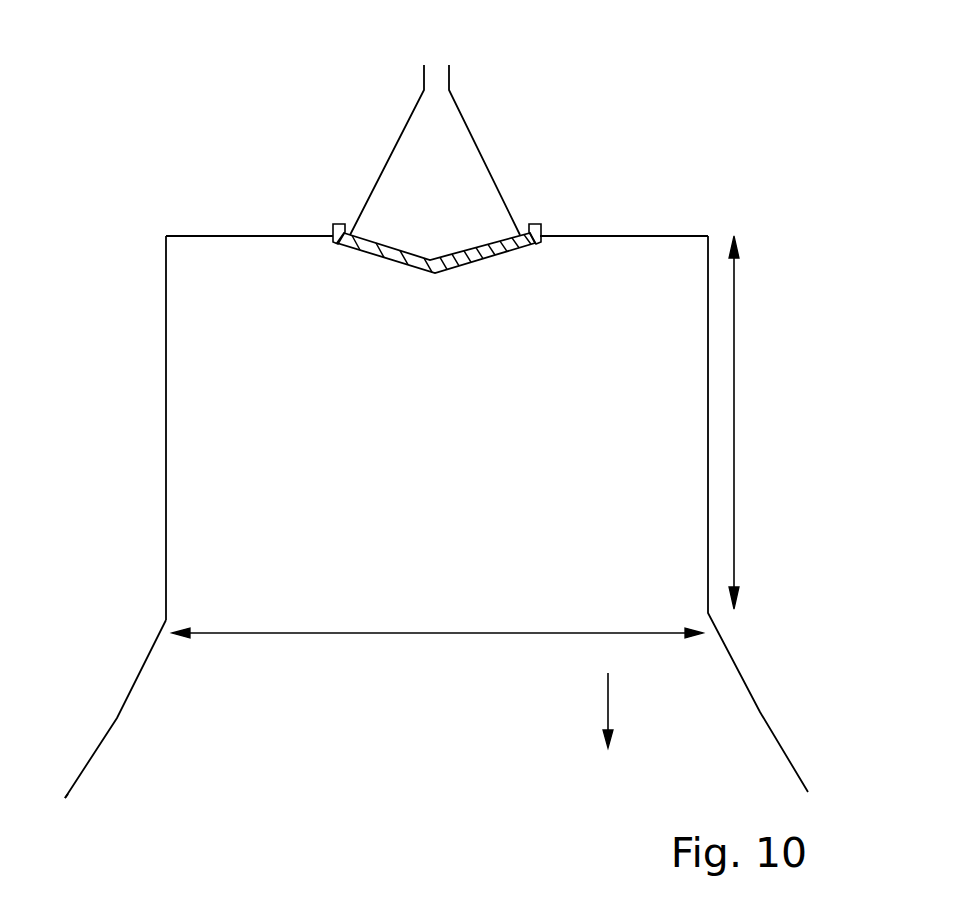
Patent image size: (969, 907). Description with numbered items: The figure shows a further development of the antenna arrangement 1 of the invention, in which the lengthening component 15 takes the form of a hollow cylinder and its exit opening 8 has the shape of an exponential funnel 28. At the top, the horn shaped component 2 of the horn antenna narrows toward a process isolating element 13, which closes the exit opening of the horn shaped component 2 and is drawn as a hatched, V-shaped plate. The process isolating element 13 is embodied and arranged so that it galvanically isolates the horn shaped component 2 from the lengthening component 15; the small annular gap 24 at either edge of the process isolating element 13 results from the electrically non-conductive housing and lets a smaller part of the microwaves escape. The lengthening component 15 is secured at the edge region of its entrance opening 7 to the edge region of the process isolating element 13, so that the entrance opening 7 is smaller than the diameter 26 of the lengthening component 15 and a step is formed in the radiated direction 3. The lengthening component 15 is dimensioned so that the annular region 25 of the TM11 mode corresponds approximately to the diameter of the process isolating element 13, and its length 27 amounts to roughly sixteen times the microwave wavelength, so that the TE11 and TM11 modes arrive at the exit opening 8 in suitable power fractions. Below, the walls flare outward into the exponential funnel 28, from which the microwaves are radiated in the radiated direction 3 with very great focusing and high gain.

The antenna arrangement 1 is at (505, 66).
The horn shaped component 2 is at (474, 140).
The radiated direction 3 is at (608, 695).
The entrance opening 7 is at (433, 241).
The exit opening 8 is at (68, 793).
The process isolating element 13 is at (383, 240).
The lengthening component 15 is at (167, 520).
The annular gap 24 is at (335, 243).
The annular region 25 is at (255, 248).
The diameter 26 is at (430, 634).
The length 27 is at (735, 385).
The exponential funnel 28 is at (127, 685).